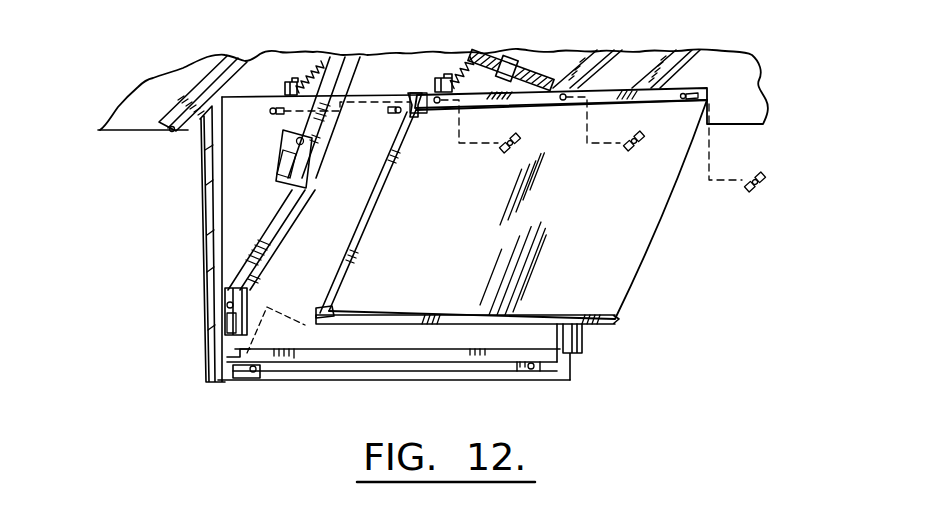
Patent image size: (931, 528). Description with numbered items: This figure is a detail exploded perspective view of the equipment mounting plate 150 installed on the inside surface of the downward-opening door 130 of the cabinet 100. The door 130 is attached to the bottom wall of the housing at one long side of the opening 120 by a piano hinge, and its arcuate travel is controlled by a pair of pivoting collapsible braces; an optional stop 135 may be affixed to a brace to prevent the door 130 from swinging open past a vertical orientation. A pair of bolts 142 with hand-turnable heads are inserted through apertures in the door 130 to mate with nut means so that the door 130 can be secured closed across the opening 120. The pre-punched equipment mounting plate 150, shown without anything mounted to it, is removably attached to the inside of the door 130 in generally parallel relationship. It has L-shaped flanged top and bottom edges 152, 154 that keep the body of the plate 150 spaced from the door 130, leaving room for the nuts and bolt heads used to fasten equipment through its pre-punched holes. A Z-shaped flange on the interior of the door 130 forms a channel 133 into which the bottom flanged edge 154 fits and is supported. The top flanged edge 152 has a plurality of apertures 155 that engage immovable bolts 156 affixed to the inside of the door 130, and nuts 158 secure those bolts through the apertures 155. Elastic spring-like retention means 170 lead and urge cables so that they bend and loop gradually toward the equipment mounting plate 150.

The cabinet 100 is at (150, 147).
The opening 120 is at (617, 78).
The door 130 is at (203, 288).
The channel 133 is at (240, 357).
The stop 135 is at (278, 176).
The bolts 142 is at (247, 380).
The equipment mounting plate 150 is at (610, 292).
The flanged top edge 152 is at (660, 100).
The flanged bottom edge 154 is at (603, 321).
The apertures 155 is at (398, 122).
The immovable bolts 156 is at (276, 114).
The nuts 158 is at (632, 151).
The retention means 170 is at (464, 56).